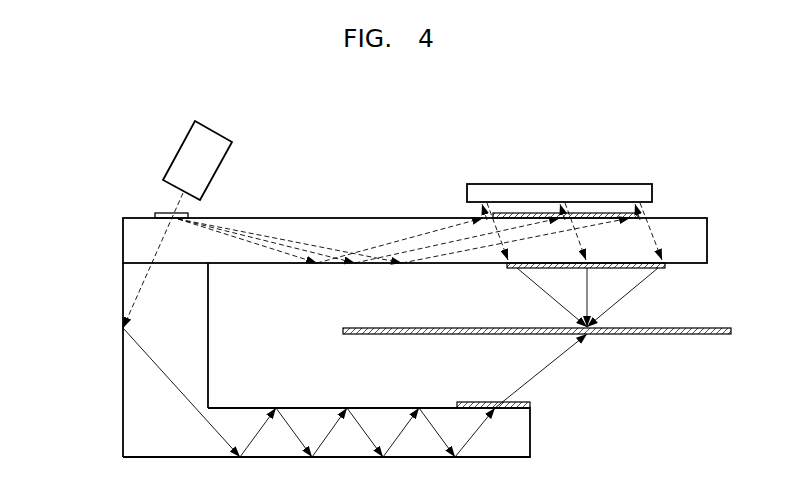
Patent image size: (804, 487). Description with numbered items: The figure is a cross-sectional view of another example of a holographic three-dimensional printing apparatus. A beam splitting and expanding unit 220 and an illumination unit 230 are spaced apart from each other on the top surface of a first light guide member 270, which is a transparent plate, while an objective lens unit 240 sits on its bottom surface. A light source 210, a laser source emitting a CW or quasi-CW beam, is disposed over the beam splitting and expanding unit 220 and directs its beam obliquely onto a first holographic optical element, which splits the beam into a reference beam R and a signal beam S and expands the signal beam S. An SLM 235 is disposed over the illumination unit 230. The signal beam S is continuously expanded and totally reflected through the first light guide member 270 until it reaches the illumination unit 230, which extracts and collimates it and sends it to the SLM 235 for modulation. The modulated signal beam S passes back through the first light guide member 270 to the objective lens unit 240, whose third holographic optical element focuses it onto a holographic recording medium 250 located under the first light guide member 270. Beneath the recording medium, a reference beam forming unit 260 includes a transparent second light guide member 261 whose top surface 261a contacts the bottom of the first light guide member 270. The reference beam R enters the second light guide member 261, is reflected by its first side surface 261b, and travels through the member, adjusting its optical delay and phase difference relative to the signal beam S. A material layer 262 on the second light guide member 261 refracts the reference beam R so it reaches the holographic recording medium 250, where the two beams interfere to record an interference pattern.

The light source 210 is at (181, 147).
The beam splitting and expanding unit 220 is at (188, 215).
The illumination unit 230 is at (640, 216).
The SLM 235 is at (582, 185).
The objective lens unit 240 is at (667, 268).
The holographic recording medium 250 is at (685, 334).
The reference beam forming unit 260 is at (336, 343).
The second light guide member 261 is at (520, 443).
The top surface of a first side of the second light guide member 261a is at (135, 263).
The first side surface of the second light guide member 261b is at (122, 370).
The material layer 262 is at (475, 402).
The first light guide member 270 is at (707, 237).
The signal beam S is at (288, 238).
The reference beam R is at (168, 377).